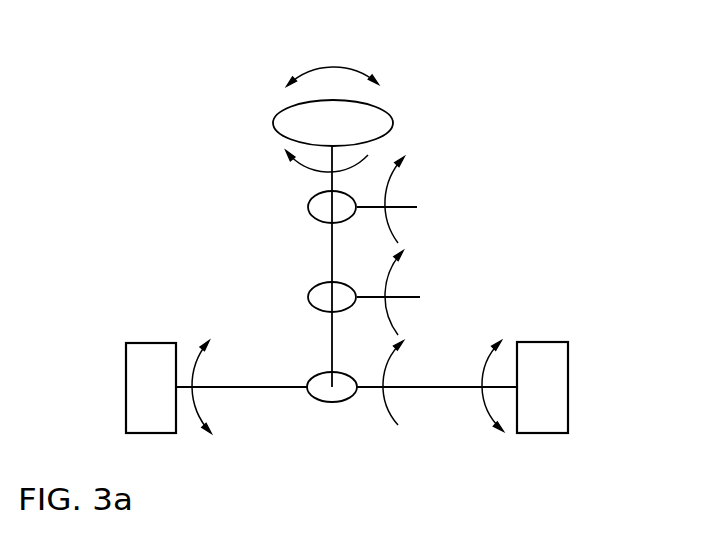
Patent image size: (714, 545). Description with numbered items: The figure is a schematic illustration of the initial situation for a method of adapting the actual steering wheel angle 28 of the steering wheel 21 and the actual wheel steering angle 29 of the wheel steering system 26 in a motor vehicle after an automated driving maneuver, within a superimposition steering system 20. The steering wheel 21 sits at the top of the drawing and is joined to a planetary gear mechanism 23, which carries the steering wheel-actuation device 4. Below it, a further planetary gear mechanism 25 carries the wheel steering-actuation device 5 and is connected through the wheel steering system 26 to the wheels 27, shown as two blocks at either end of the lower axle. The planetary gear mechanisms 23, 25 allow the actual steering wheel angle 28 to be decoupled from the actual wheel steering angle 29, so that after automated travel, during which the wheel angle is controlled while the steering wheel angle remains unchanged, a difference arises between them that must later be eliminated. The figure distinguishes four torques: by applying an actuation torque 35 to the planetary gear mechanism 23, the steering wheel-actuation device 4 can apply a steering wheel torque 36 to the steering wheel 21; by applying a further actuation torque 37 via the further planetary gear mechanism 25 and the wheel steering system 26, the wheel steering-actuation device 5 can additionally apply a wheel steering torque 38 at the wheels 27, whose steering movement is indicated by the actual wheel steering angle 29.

The superimposition steering system 20 is at (220, 117).
The steering wheel 21 is at (392, 122).
The actual steering wheel angle 28 is at (360, 62).
The steering wheel torque 36 is at (312, 167).
The steering wheel-actuation device 4 is at (276, 214).
The planetary gear mechanism 23 is at (309, 211).
The actuation torque 35 is at (387, 192).
The wheel steering-actuation device 5 is at (276, 291).
The further planetary gear mechanism 25 is at (308, 297).
The further actuation torque 37 is at (387, 284).
The wheel steering system 26 is at (323, 402).
The wheels 27 is at (125, 382).
The actual wheel steering angle 29 is at (195, 358).
The wheel steering torque 38 is at (389, 411).